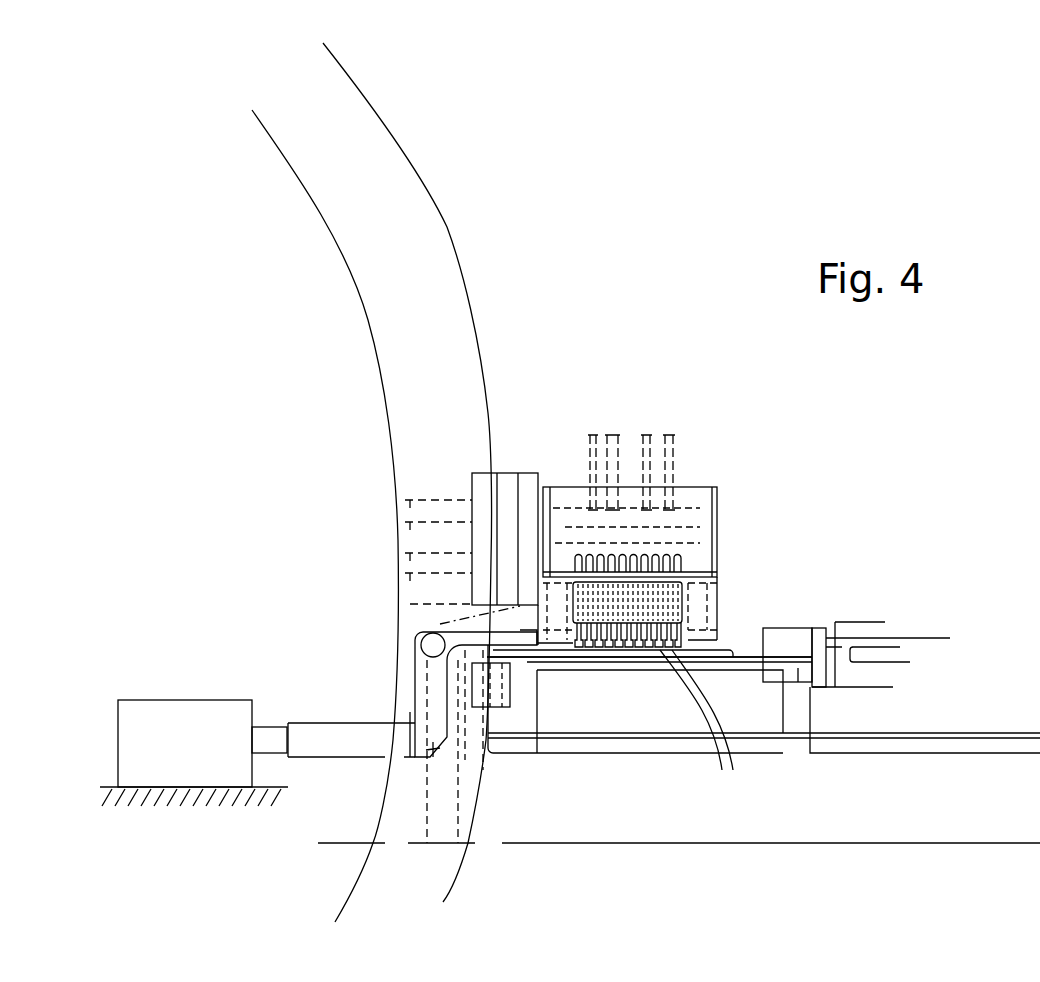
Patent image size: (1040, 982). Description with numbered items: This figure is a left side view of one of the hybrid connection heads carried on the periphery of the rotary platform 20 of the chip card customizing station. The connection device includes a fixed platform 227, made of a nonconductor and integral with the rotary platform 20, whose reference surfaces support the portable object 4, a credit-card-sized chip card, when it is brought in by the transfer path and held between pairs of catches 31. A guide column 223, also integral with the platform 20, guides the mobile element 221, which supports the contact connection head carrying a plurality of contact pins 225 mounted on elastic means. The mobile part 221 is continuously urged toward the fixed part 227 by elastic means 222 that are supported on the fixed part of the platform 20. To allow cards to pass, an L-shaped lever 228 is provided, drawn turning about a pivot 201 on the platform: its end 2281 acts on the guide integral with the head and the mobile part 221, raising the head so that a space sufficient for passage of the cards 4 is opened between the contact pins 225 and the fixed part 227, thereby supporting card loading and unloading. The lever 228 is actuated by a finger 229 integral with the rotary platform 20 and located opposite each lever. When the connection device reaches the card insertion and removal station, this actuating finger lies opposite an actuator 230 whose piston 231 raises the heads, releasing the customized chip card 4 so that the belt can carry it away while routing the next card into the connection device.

The rotary platform 20 is at (462, 350).
The guide column 223 is at (493, 478).
The mobile element 221 is at (700, 520).
The elastic means 222 is at (673, 436).
The contact pins 225 is at (649, 722).
The fixed platform 227 is at (597, 710).
The portable object 4 is at (745, 657).
The catches 31 is at (793, 633).
The L-shaped lever 228 is at (425, 690).
The end of L-shaped lever 2281 is at (530, 635).
The pivot axis 201 is at (418, 637).
The actuator 230 is at (175, 726).
The piston 231 is at (265, 740).
The finger 229 is at (343, 745).